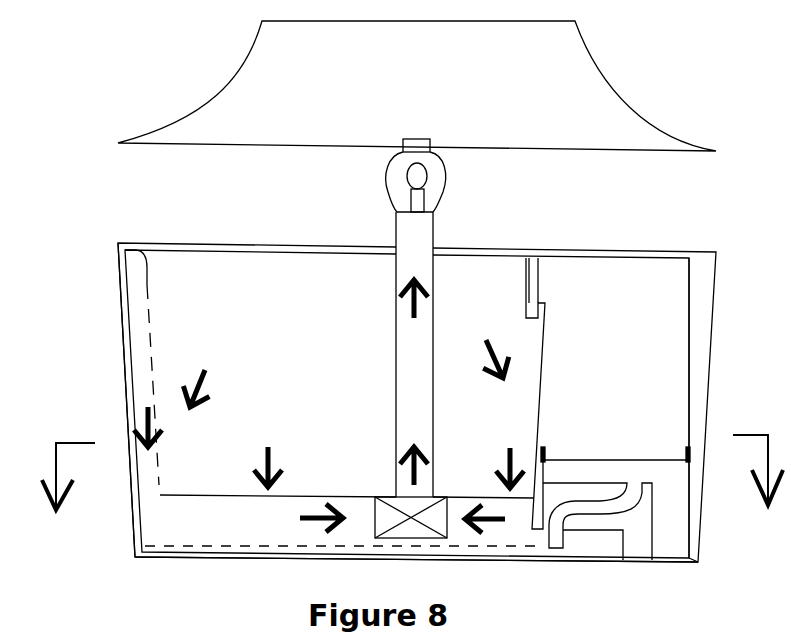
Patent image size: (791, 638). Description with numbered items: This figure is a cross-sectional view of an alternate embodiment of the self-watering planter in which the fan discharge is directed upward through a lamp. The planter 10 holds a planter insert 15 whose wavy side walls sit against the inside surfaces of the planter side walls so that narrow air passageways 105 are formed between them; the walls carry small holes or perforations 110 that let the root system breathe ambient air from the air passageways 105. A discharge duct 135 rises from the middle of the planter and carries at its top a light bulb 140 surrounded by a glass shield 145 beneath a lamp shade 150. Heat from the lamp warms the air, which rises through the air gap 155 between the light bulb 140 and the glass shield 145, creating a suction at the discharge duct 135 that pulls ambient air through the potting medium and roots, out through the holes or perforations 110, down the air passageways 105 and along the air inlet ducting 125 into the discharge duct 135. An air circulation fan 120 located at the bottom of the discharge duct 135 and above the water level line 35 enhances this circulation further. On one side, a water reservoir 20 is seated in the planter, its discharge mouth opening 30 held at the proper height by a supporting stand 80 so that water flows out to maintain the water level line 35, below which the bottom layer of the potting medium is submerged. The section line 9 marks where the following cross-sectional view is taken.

The lamp shade 150 is at (603, 80).
The air gap 155 is at (395, 192).
The glass shield 145 is at (447, 174).
The light bulb 140 is at (423, 187).
The discharge duct 135 is at (396, 268).
The planter 10 is at (656, 250).
The planter insert 15 is at (183, 250).
The air passageways 105 is at (143, 362).
The holes or perforations 110 is at (148, 305).
The water level line 35 is at (222, 545).
The air circulation fan 120 is at (413, 520).
The air inlet ducting 125 is at (193, 520).
The water reservoir 20 is at (692, 318).
The discharge mouth opening 30 is at (553, 550).
The supporting stand 80 is at (695, 560).
The section line 9— 9 is at (412, 493).